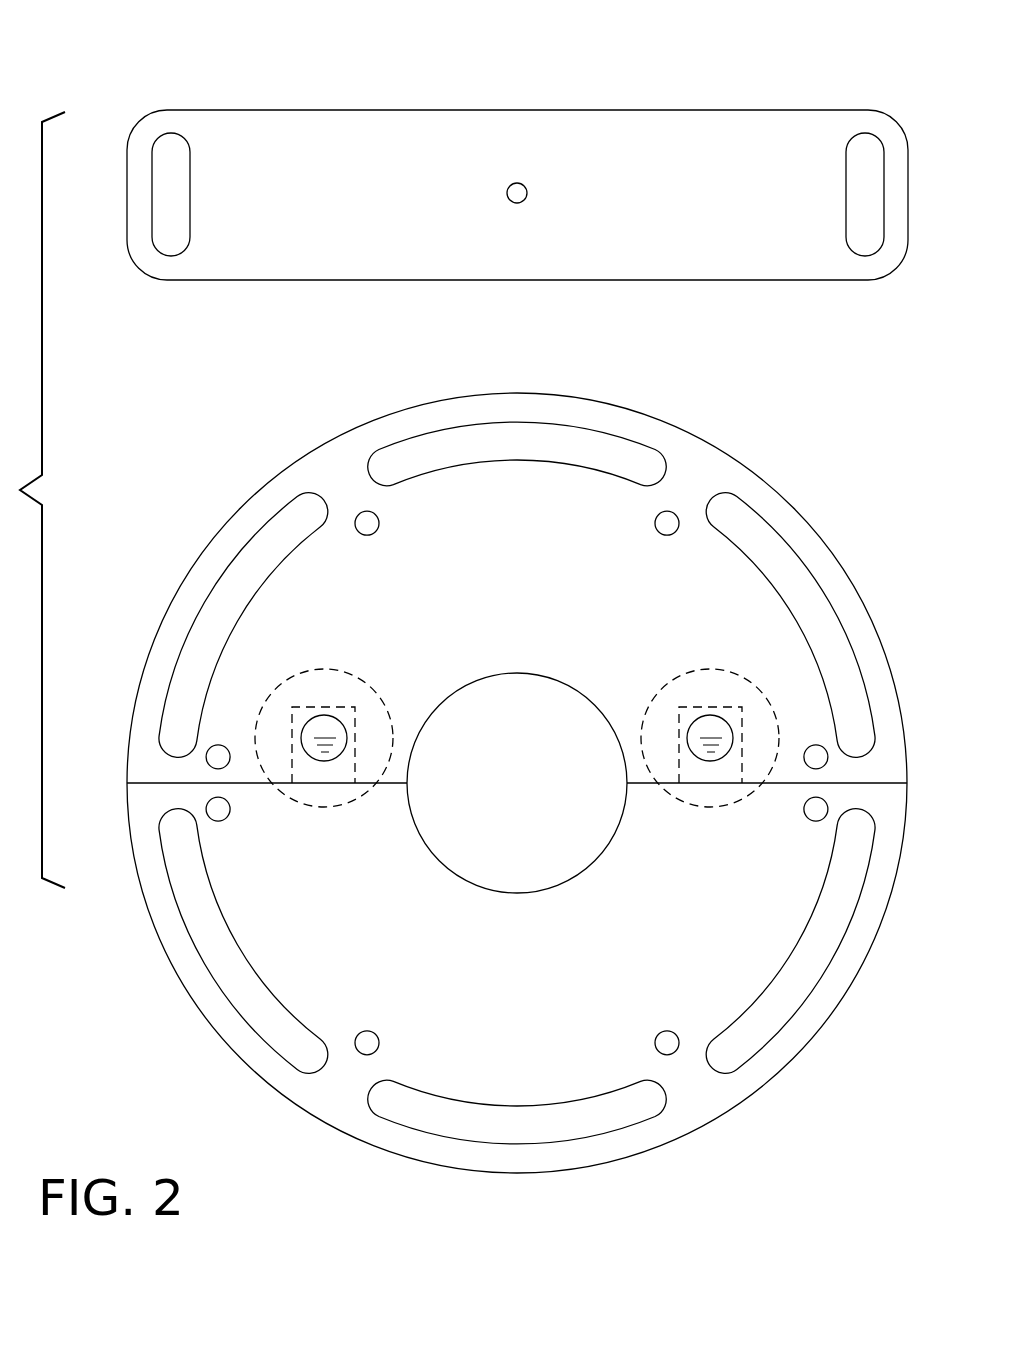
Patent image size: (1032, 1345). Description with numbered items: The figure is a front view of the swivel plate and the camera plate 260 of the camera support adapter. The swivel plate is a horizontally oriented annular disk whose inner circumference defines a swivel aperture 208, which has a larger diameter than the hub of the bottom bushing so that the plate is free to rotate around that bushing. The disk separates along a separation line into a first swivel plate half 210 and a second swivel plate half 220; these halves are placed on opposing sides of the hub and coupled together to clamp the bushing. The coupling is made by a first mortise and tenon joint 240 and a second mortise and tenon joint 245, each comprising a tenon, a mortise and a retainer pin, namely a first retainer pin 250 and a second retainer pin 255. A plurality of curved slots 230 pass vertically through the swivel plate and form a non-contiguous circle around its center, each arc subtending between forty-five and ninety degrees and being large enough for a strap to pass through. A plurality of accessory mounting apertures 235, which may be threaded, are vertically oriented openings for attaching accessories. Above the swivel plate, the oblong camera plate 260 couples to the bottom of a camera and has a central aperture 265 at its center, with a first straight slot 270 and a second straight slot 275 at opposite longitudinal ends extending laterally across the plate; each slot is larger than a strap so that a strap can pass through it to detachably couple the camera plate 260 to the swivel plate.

The swivel aperture 208 is at (500, 893).
The first swivel plate half 210 is at (323, 1118).
The second swivel plate half 220 is at (260, 490).
The plurality of curved slots 230 is at (737, 500).
The plurality of accessory mounting apertures 235 is at (829, 803).
The first mortise and tenon joint 240 is at (365, 682).
The second mortise and tenon joint 245 is at (676, 680).
The first retainer pin 250 is at (322, 715).
The second retainer pin 255 is at (712, 715).
The camera plate 260 is at (870, 281).
The central aperture 265 is at (516, 183).
The first straight slot 270 is at (172, 133).
The second straight slot 275 is at (860, 133).